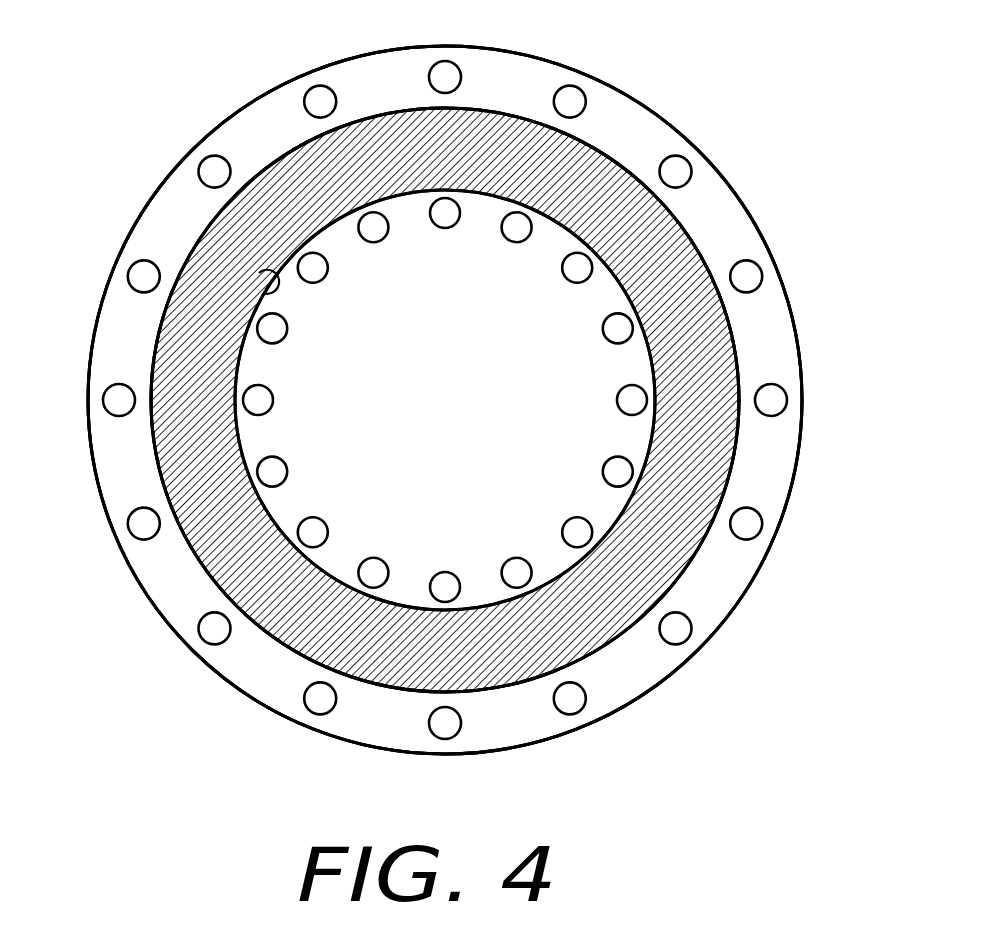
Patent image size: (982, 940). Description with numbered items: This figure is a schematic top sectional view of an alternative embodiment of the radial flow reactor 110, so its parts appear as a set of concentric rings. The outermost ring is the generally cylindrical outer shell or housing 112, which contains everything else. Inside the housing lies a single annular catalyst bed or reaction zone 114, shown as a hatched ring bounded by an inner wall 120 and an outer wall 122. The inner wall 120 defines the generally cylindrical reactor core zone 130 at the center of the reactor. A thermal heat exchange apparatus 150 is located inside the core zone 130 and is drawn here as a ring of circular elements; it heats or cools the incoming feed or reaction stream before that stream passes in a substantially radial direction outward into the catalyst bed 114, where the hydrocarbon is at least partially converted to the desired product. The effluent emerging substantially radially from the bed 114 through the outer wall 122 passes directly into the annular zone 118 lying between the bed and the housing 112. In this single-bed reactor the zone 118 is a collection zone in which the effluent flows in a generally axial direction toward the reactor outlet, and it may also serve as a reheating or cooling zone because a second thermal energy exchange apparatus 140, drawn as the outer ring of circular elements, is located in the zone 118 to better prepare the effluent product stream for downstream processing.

The radial flow reactor 110 is at (700, 101).
The outer shell or housing 112 is at (734, 187).
The annular catalyst bed or reaction zone 114 is at (707, 347).
The annular zone 118 is at (763, 497).
The inner wall 120 is at (257, 283).
The outer wall 122 is at (160, 312).
The reactor core zone 130 is at (474, 393).
The second thermal energy exchange apparatus 140 is at (452, 68).
The thermal heat exchange apparatus 150 is at (373, 570).